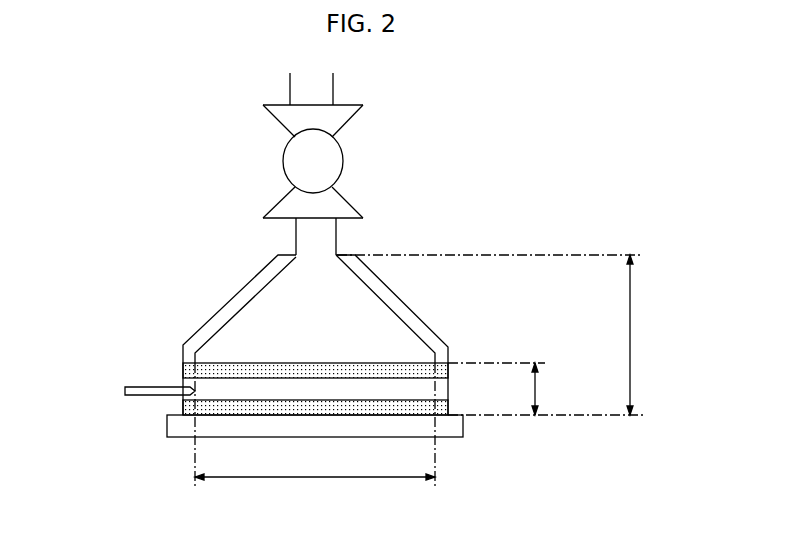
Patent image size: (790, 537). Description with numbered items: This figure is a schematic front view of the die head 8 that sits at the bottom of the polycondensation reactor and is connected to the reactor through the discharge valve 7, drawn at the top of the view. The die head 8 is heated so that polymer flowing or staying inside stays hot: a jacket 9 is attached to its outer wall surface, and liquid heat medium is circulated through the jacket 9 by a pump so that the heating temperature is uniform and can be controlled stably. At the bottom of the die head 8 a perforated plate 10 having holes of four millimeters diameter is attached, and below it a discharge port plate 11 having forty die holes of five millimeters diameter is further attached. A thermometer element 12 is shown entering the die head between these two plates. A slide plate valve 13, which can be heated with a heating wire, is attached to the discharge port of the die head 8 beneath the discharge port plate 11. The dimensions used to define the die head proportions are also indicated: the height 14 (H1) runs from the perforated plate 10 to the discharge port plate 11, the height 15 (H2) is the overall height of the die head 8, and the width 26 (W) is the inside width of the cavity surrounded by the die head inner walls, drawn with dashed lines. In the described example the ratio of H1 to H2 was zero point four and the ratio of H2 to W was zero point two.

The discharge valve 7 is at (345, 160).
The die head 8 is at (247, 317).
The jacket 9 is at (258, 283).
The perforated plate 10 is at (182, 365).
The discharge port plate 11 is at (182, 405).
The thermometer element 12 is at (125, 387).
The slide plate valve 13 is at (455, 430).
The height (H1) from perforated plate to discharge port plate 14 is at (535, 390).
The height (H2) of die head 15 is at (630, 335).
The width (W) of die head bottom 26 is at (315, 425).